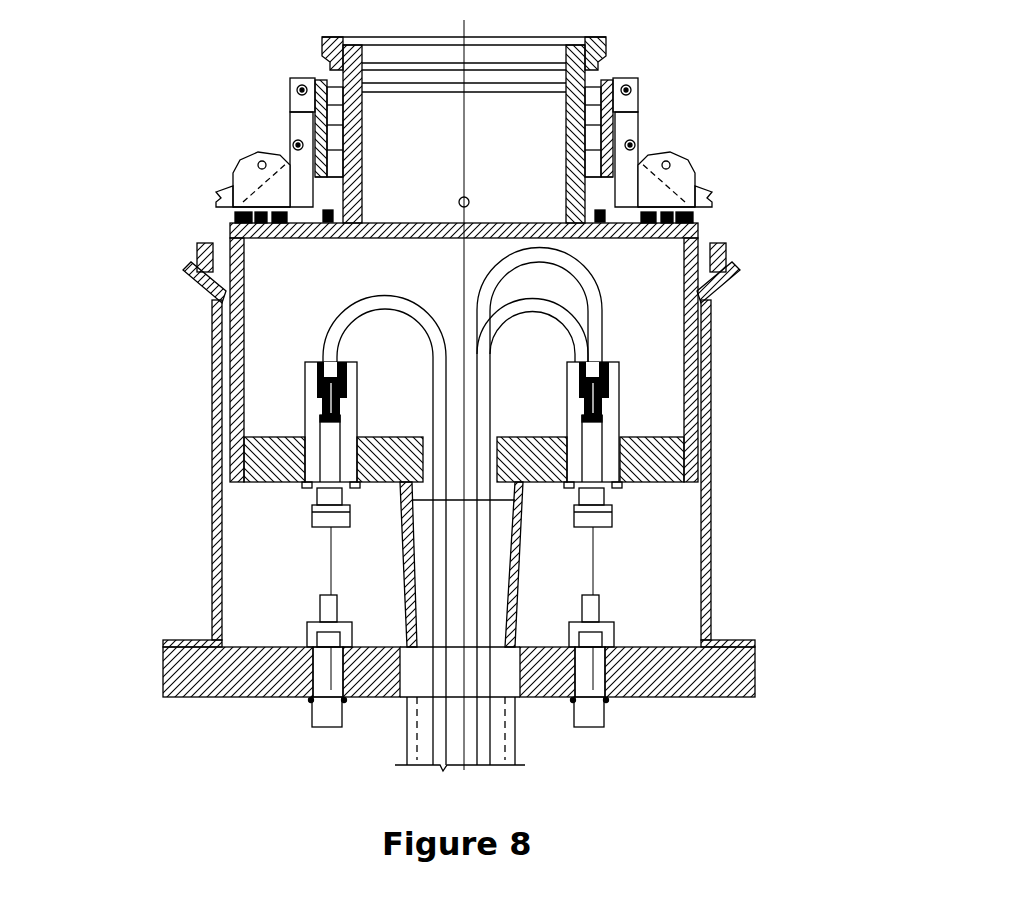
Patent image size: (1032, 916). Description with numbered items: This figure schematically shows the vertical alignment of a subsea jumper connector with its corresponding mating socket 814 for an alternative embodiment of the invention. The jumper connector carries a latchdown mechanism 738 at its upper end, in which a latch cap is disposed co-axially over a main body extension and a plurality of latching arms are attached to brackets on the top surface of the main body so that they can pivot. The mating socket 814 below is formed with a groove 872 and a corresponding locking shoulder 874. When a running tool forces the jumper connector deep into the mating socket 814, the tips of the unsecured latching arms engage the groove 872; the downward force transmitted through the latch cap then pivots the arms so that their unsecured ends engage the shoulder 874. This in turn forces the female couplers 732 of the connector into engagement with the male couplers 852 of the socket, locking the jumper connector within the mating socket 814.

The latchdown mechanism 738 is at (528, 122).
The groove 872 is at (801, 216).
The locking shoulder 874 is at (794, 421).
The mating socket 814 is at (531, 498).
The female couplers 732 is at (196, 479).
The male couplers 852 is at (192, 661).